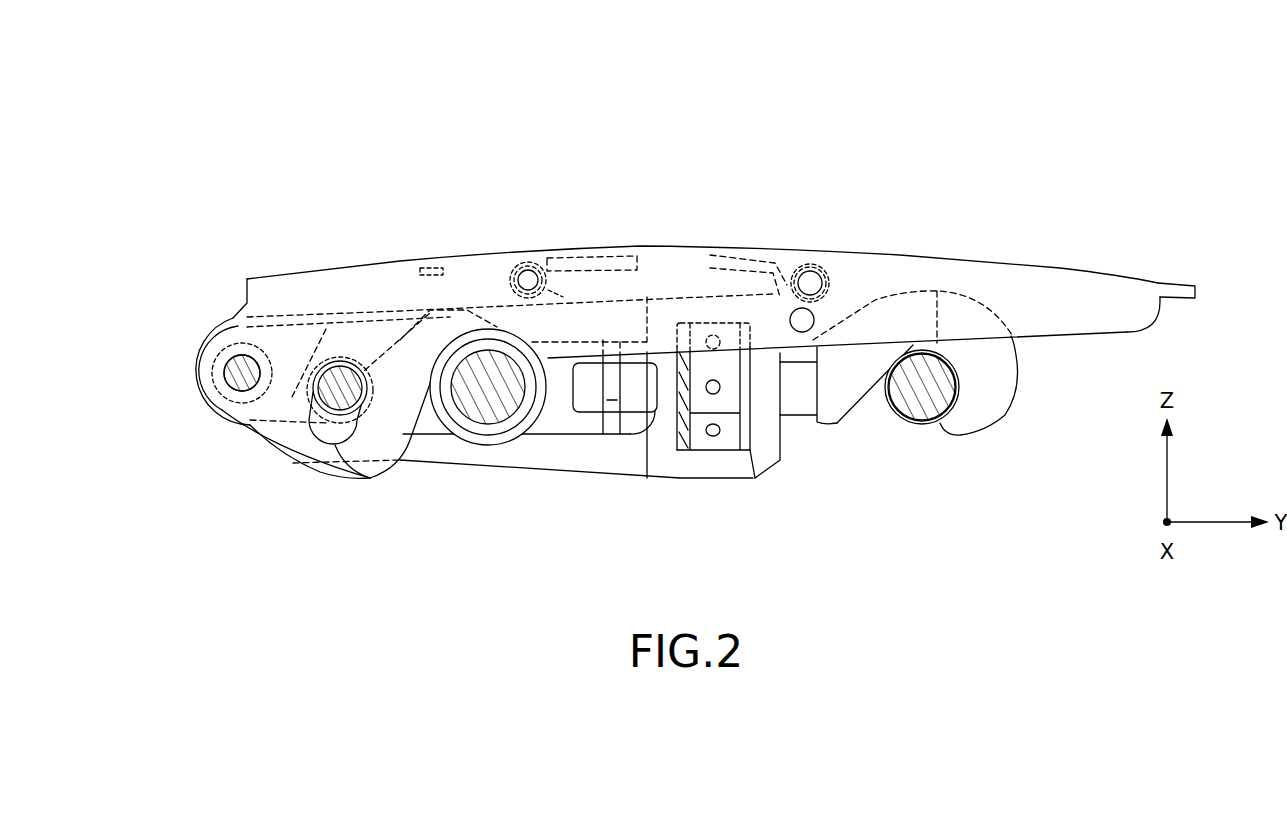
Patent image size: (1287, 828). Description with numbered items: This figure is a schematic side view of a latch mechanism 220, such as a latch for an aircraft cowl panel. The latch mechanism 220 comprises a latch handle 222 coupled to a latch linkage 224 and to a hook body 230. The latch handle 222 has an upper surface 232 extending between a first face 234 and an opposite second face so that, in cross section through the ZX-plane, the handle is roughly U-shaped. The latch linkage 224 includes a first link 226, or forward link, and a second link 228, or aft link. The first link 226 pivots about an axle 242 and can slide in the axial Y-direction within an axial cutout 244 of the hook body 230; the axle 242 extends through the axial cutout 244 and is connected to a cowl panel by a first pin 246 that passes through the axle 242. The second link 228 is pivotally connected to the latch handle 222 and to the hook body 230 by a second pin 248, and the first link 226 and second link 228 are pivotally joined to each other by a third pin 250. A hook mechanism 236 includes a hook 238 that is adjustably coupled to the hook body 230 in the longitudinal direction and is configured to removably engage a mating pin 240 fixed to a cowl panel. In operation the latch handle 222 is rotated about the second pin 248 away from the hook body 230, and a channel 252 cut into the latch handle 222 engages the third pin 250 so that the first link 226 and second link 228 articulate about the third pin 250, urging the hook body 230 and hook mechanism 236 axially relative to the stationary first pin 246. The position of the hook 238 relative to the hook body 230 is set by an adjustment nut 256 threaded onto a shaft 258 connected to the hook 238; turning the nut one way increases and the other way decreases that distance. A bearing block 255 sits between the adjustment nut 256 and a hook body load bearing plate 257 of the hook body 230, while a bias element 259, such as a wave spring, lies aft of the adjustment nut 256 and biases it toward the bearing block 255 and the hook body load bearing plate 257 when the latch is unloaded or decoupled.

The latch mechanism 220 is at (240, 150).
The latch handle 222 is at (918, 258).
The latch linkage 224 is at (227, 446).
The first link 226 is at (378, 330).
The second link 228 is at (264, 335).
The hook body 230 is at (577, 455).
The upper surface 232 is at (1015, 264).
The first face 234 is at (1056, 323).
The hook mechanism 236 is at (863, 460).
The hook 238 is at (992, 412).
The mating pin 240 is at (920, 395).
The axle 242 is at (500, 412).
The axial cutout 244 is at (595, 433).
The first pin 246 is at (510, 422).
The second pin 248 is at (222, 384).
The third pin 250 is at (339, 383).
The channel 252 is at (340, 447).
The bearing block 255 is at (750, 427).
The adjustment nut 256 is at (730, 447).
The hook body load bearing plate 257 is at (767, 360).
The shaft 258 is at (795, 403).
The bias element 259 is at (683, 453).